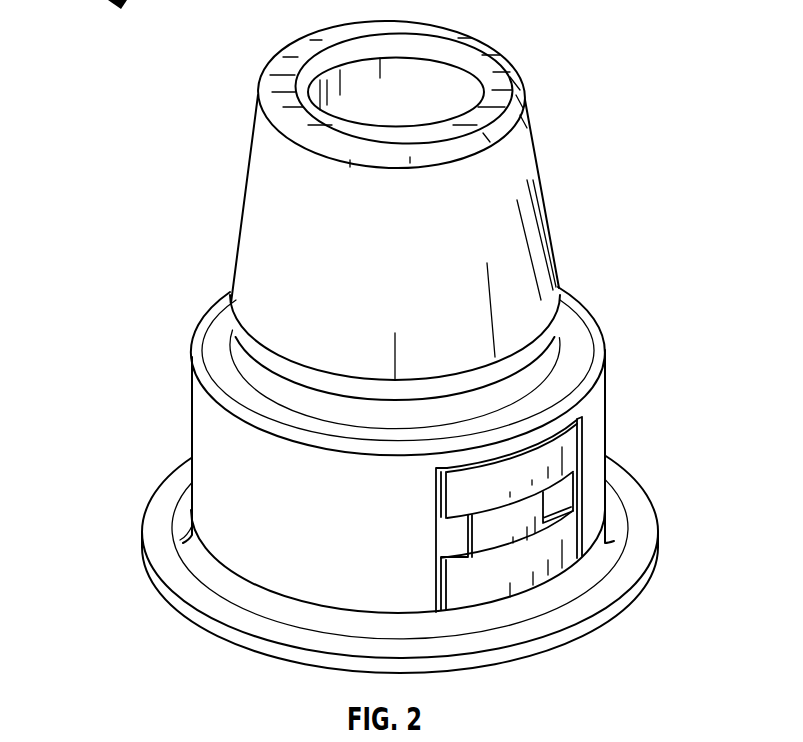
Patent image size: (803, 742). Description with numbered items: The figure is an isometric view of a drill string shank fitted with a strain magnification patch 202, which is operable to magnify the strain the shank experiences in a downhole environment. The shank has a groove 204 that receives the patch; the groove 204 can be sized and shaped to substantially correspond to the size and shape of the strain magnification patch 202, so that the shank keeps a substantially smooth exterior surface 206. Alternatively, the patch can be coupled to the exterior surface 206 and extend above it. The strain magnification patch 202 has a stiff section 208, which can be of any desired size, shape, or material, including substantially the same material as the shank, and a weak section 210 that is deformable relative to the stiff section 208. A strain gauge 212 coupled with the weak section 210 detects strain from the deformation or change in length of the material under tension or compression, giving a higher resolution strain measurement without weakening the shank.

The strain magnification patch 202 is at (591, 507).
The groove 204 is at (435, 595).
The exterior surface 206 is at (240, 498).
The stiff section 208 is at (505, 563).
The weak section 210 is at (573, 498).
The strain gauge 212 is at (510, 520).